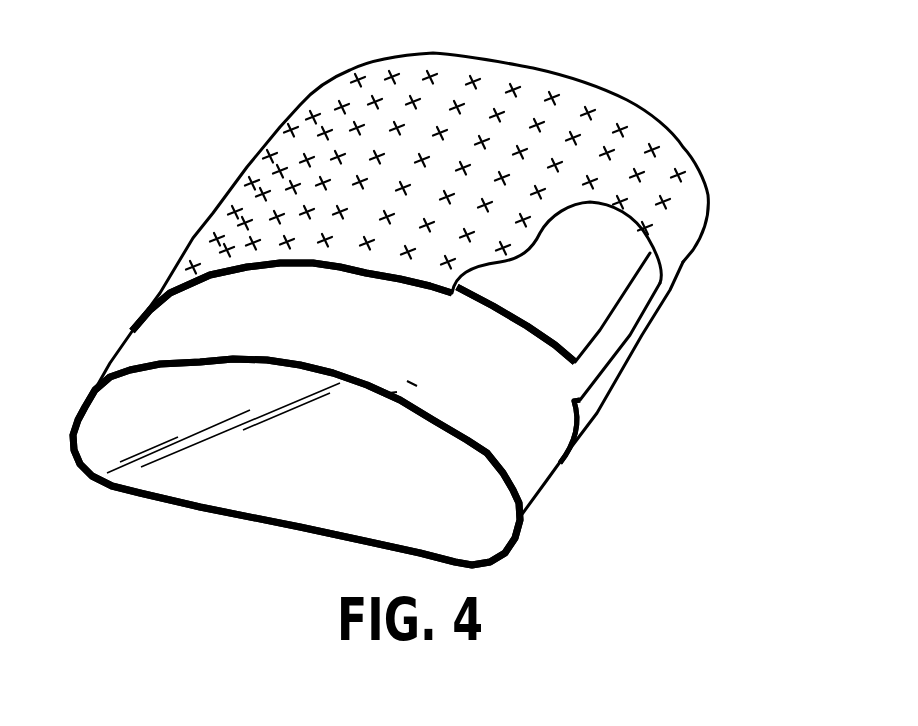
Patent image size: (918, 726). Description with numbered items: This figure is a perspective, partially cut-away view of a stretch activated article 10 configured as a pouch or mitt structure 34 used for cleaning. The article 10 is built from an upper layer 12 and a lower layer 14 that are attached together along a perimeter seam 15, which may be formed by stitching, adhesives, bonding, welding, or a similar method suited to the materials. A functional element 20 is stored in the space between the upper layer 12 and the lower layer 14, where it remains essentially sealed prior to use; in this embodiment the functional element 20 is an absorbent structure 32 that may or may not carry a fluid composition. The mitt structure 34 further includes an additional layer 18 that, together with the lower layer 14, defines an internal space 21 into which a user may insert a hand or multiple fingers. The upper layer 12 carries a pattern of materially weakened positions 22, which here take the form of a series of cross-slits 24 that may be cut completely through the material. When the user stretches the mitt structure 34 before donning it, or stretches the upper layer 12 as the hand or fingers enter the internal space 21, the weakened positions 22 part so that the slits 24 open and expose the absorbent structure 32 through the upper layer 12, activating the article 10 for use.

The article 10 is at (160, 140).
The upper layer 12 is at (262, 252).
The lower layer 14 is at (597, 355).
The perimeter seam 15 is at (168, 293).
The additional layer 18 is at (257, 518).
The functional element 20 is at (568, 322).
The internal space 21 is at (393, 390).
The weakened positions 22 is at (611, 105).
The cross-slits 24 is at (680, 175).
The absorbent structure 32 is at (503, 285).
The mitt structure 34 is at (673, 290).